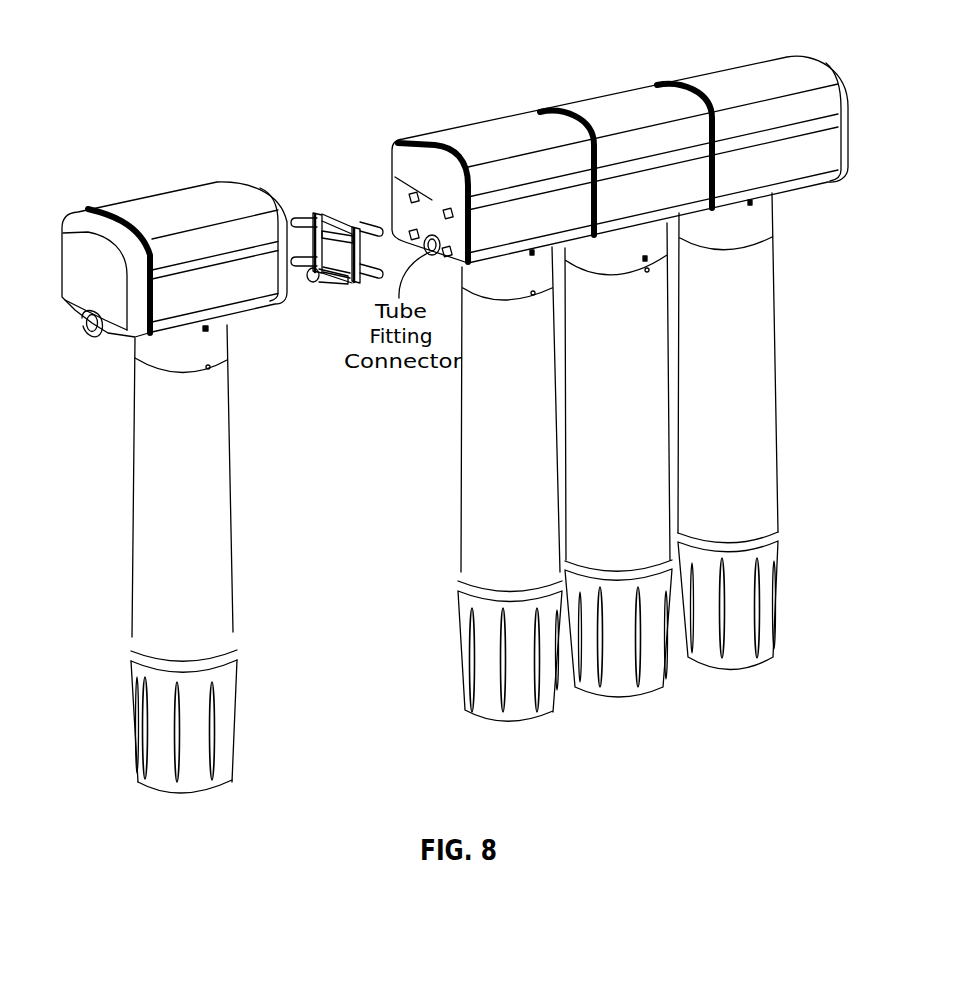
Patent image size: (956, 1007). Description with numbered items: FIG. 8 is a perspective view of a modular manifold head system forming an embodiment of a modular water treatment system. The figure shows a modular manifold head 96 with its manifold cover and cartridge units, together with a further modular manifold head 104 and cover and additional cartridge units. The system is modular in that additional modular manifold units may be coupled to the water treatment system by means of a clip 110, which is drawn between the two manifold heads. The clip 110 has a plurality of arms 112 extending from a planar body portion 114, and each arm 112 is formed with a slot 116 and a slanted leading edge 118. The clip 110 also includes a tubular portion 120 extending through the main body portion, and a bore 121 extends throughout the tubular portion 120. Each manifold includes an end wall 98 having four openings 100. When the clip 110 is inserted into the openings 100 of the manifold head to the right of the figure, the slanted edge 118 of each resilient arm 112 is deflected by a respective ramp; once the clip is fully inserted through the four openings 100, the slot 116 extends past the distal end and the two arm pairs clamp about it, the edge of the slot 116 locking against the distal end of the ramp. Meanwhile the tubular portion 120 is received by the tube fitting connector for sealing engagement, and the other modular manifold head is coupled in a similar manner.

The clip 110 is at (274, 72).
The modular manifold head 96 is at (192, 286).
The further modular manifold head 104 is at (517, 124).
The openings 100 is at (391, 140).
The end wall 98 is at (452, 234).
The arms 112 is at (337, 213).
The planar body portion 114 is at (318, 212).
The slot 116 is at (302, 218).
The slanted leading edge 118 is at (331, 280).
The tubular portion 120 is at (323, 282).
The bore 121 is at (313, 282).